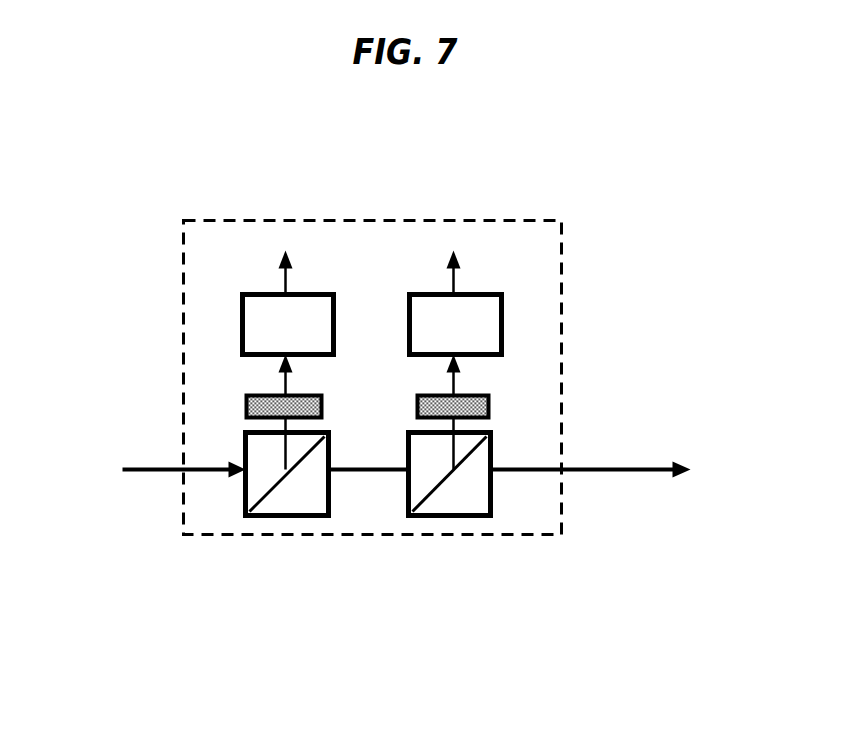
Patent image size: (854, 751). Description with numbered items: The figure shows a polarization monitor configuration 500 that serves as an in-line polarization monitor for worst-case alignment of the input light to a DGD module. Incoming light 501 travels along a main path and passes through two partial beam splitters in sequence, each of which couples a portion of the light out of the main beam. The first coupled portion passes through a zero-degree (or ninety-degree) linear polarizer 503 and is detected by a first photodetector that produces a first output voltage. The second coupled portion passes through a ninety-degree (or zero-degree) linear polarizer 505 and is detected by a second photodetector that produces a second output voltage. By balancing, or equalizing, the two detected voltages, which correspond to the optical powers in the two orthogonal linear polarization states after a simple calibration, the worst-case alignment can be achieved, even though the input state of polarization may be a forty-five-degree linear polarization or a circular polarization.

The polarization monitor configuration 500 is at (383, 222).
The incoming light 501 is at (150, 460).
The linear polarizer 503 is at (246, 405).
The linear polarizer 505 is at (488, 398).